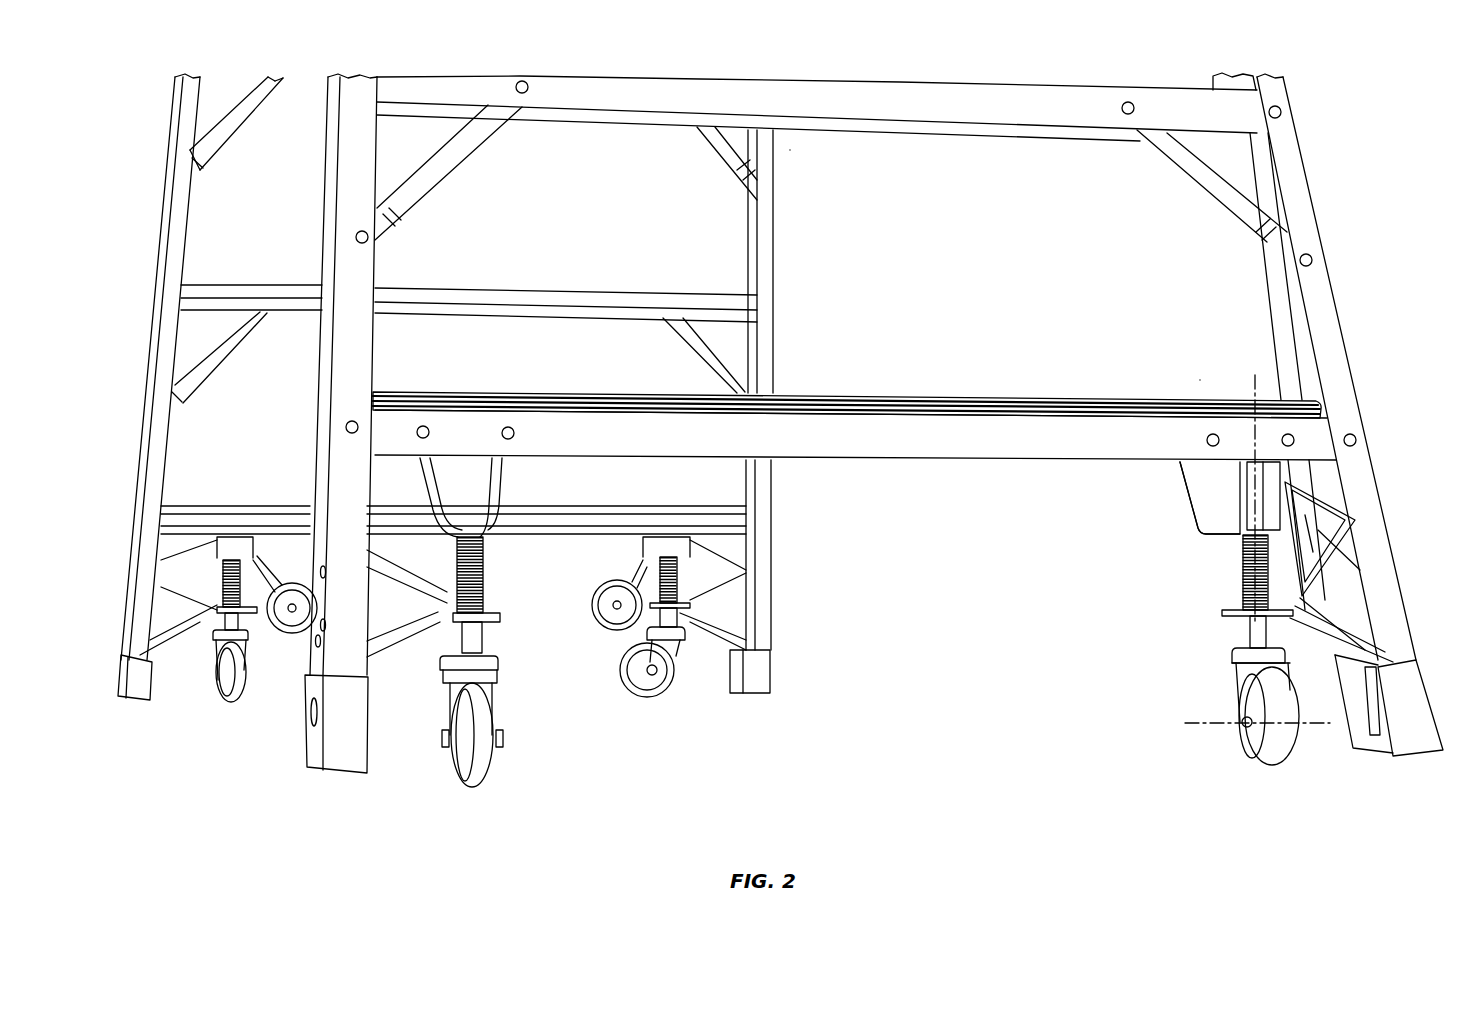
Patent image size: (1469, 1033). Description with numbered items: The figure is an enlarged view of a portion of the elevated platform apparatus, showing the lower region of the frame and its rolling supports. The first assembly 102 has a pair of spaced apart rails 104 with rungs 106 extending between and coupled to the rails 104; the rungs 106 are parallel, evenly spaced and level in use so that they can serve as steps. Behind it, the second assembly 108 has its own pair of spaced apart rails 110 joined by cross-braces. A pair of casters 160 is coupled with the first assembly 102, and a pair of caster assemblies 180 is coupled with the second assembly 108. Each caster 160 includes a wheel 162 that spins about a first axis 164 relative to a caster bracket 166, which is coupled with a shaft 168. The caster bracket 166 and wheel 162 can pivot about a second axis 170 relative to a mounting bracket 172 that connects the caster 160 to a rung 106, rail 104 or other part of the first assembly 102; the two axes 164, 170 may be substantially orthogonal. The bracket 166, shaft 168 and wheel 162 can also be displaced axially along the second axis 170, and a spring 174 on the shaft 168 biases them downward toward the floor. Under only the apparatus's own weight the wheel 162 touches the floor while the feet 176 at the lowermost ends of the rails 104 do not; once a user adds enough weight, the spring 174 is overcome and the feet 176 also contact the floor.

The first assembly 102 is at (1337, 161).
The rails 104 is at (340, 125).
The rungs 106 is at (1148, 395).
The second assembly 108 is at (822, 315).
The rails 110 is at (178, 232).
The casters 160 is at (487, 797).
The wheel 162 is at (1255, 765).
The first axis 164 is at (1198, 722).
The caster bracket 166 is at (1230, 662).
The shaft 168 is at (1243, 608).
The second axis 170 is at (1236, 390).
The mounting bracket 172 is at (1205, 503).
The spring 174 is at (1243, 573).
The feet 176 is at (355, 744).
The caster assemblies 180 is at (192, 680).